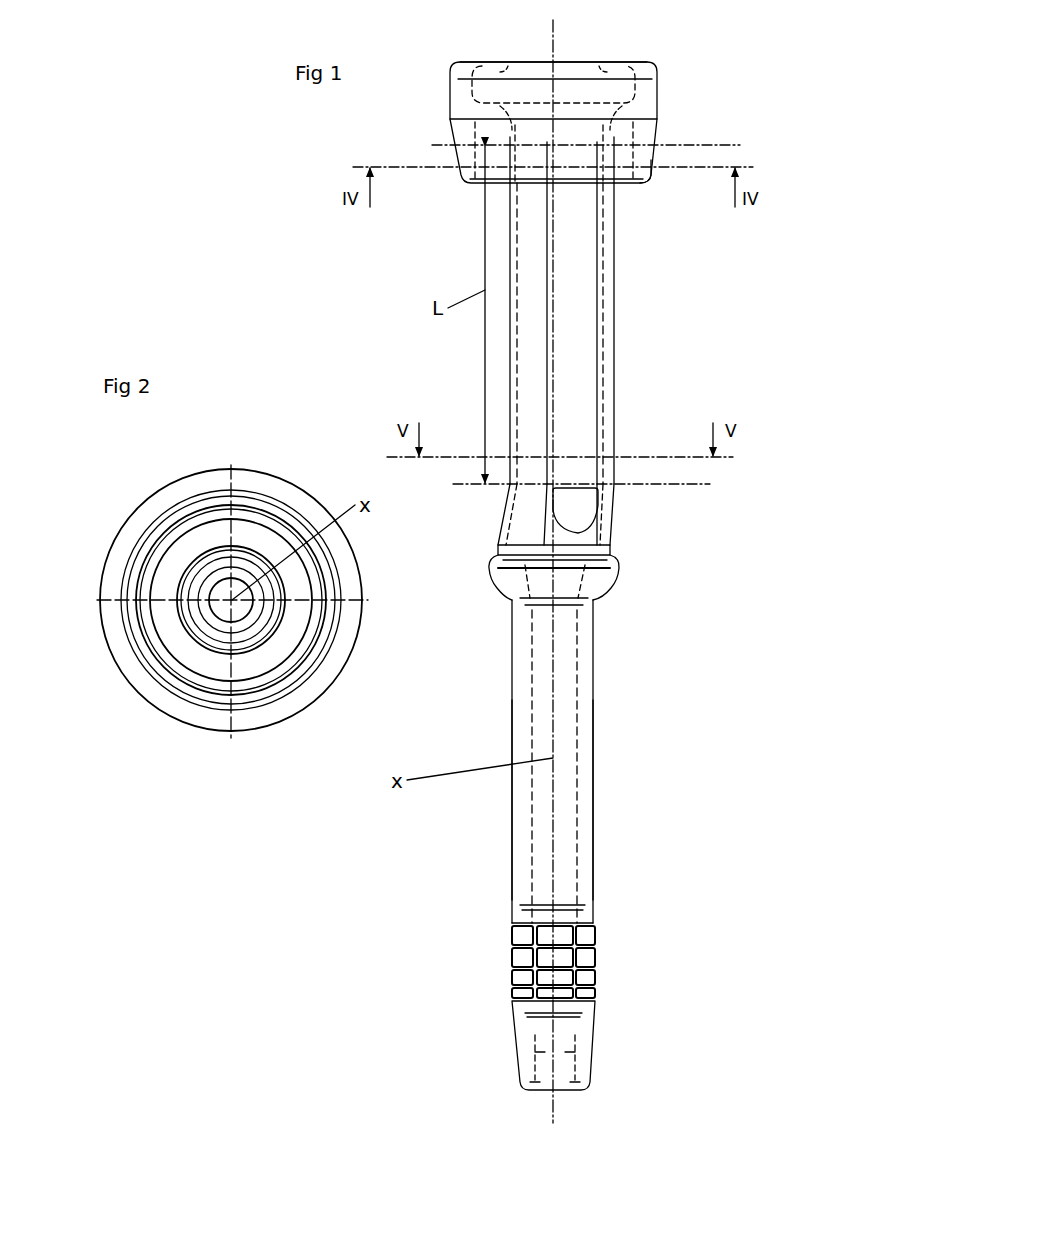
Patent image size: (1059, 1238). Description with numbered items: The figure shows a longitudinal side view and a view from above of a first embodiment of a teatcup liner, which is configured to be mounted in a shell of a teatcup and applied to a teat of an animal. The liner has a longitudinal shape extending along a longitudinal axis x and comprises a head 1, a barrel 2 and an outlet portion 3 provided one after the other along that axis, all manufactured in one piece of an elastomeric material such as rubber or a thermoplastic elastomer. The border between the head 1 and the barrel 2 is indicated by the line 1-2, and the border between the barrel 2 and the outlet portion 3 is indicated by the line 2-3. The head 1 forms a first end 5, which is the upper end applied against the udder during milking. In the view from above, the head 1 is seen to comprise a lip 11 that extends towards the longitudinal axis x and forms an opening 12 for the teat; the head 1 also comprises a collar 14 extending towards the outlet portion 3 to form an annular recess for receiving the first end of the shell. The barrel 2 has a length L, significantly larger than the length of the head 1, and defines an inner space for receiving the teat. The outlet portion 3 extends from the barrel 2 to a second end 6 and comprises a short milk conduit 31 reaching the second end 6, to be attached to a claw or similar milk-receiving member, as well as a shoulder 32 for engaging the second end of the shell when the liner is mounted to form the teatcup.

In FIG. 1, the head 1 is at (648, 85).
In FIG. 2, the head 1 is at (150, 500).
In FIG. 1, the barrel 2 is at (607, 315).
In FIG. 1, the outlet portion 3 is at (582, 743).
In FIG. 1, the first end 5 is at (475, 62).
In FIG. 1, the second end 6 is at (532, 1090).
In FIG. 1, the lip 11 is at (508, 65).
In FIG. 2, the lip 11 is at (245, 538).
In FIG. 1, the opening 12 is at (567, 67).
In FIG. 2, the opening 12 is at (213, 605).
In FIG. 1, the collar 14 is at (642, 180).
In FIG. 1, the short milk conduit 31 is at (588, 817).
In FIG. 1, the shoulder 32 is at (610, 555).
In FIG. 1, the border line between head and barrel 1-2 is at (695, 143).
In FIG. 1, the border line between barrel and outlet portion 2-3 is at (682, 485).